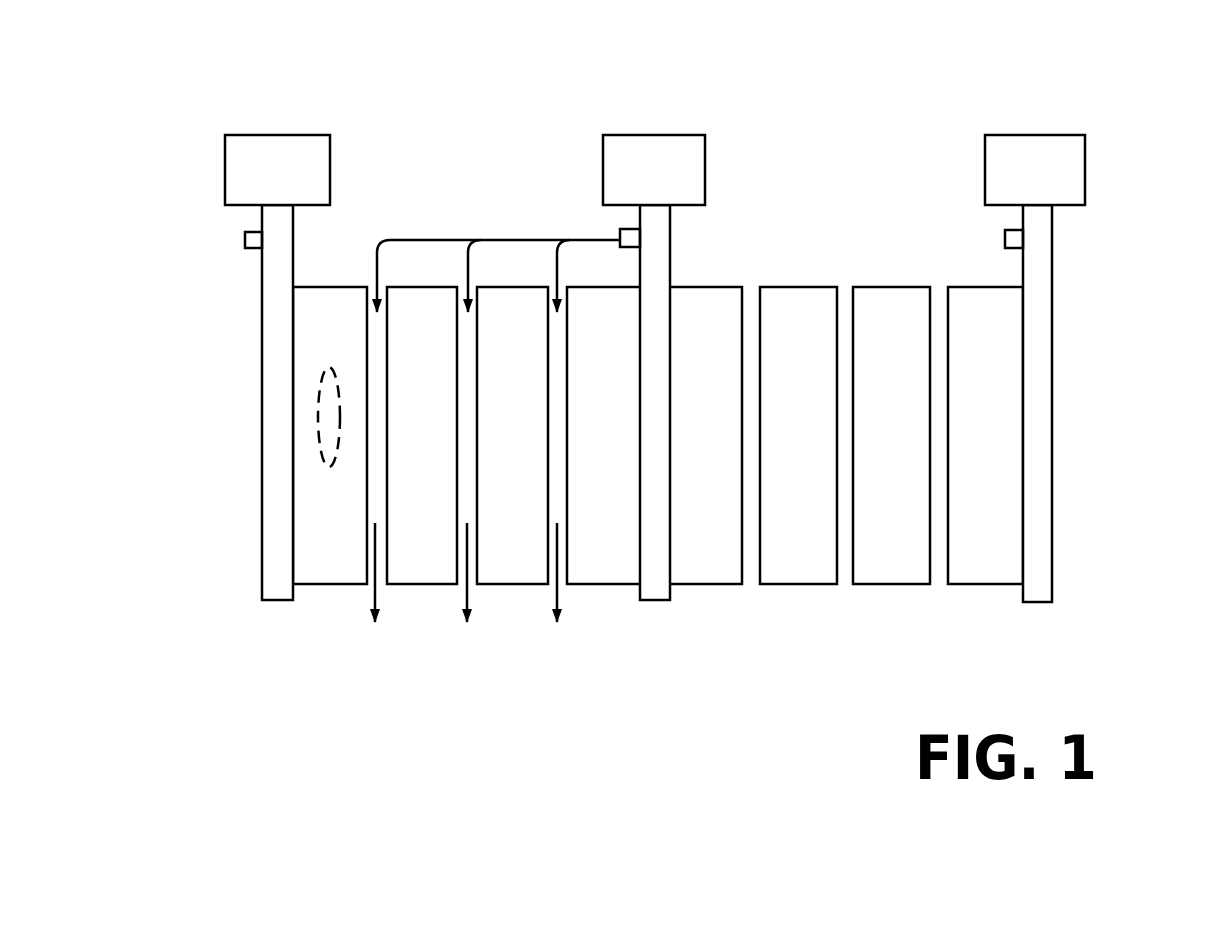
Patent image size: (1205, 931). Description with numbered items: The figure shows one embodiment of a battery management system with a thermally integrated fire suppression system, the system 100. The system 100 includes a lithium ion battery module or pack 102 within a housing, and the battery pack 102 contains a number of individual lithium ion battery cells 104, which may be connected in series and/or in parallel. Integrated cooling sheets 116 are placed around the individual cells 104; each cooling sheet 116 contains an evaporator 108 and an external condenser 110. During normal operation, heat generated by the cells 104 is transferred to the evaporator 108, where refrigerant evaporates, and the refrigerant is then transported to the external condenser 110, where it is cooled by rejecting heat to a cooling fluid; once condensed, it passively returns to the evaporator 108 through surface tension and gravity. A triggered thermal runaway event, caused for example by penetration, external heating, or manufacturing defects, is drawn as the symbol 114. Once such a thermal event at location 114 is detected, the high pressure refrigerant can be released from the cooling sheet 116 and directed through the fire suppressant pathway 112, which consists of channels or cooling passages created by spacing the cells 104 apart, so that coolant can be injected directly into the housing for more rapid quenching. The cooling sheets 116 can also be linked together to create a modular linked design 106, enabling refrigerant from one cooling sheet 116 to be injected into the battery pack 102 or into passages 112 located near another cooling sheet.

The system 100 is at (945, 81).
The lithium ion battery module or pack 102 is at (230, 511).
The lithium ion battery cell 104 is at (658, 435).
The modular linked design 106 is at (880, 620).
The evaporator 108 is at (1070, 402).
The external condenser 110 is at (300, 186).
The fire suppressant pathway 112 is at (438, 239).
The thermal runaway event 114 is at (315, 413).
The cooling sheet 116 is at (262, 578).